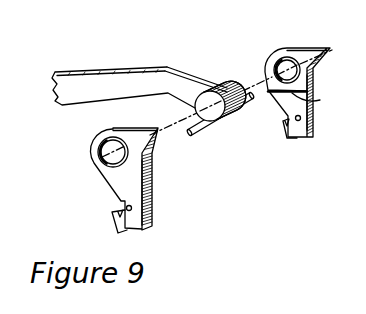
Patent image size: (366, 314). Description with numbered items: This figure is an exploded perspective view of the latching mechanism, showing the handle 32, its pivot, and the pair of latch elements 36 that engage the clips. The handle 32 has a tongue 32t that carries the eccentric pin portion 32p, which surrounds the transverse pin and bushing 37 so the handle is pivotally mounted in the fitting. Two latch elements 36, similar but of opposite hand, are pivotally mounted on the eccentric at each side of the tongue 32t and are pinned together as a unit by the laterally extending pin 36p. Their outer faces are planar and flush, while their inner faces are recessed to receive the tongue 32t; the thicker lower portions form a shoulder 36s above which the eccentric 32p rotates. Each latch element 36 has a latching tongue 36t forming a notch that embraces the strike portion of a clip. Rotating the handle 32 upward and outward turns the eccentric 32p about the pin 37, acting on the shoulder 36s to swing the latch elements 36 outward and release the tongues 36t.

The handle 32 is at (90, 86).
The tongue of the handle 32t is at (190, 83).
The eccentric pin portion 32p is at (217, 113).
The latch element 36 is at (98, 144).
The shoulder 36s is at (150, 172).
The latching tongue 36t is at (113, 226).
The laterally extending pin 36p is at (128, 214).
The pivot pin 37 is at (250, 115).